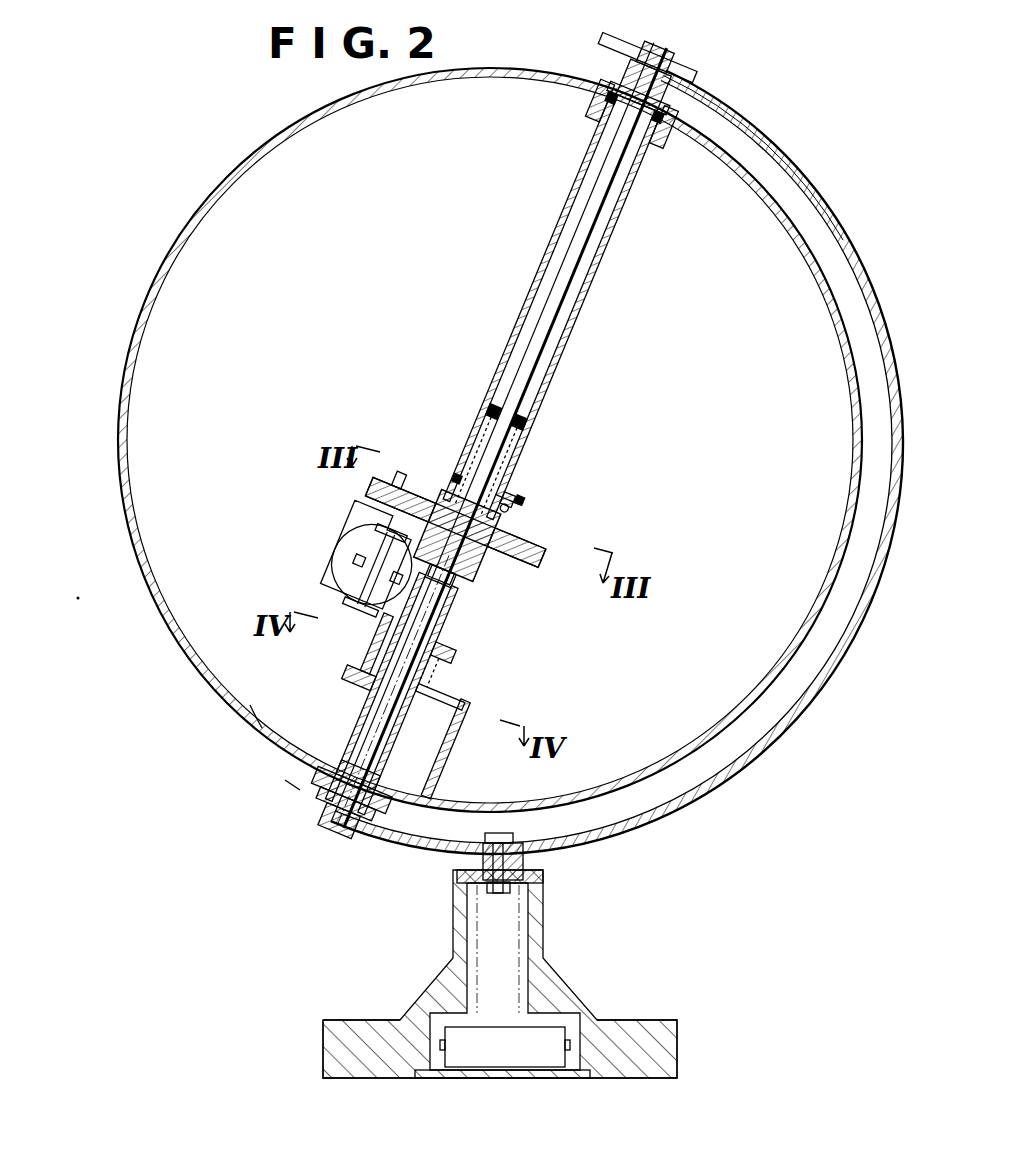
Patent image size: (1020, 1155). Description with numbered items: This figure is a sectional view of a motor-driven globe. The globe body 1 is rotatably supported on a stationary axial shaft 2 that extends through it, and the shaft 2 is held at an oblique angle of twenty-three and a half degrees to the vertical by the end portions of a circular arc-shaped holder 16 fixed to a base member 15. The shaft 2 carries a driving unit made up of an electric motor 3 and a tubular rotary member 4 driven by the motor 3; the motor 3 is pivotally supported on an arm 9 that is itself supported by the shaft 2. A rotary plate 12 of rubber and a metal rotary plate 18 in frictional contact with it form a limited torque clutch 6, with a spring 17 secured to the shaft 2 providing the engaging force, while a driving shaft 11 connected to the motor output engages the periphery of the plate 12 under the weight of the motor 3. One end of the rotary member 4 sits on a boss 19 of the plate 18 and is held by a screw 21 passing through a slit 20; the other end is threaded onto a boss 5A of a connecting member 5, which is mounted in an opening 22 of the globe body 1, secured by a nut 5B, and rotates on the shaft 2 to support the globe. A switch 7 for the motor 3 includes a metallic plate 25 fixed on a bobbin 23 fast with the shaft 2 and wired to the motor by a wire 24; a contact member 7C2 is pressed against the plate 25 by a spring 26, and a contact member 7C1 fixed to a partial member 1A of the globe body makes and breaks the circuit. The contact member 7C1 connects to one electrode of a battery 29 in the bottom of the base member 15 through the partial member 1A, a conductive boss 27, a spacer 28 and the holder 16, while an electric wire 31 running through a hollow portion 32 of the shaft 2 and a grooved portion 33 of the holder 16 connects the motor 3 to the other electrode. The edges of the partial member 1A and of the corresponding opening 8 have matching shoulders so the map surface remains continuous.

The globe body 1 is at (205, 212).
The partial member 1A is at (296, 788).
The stationary axial shaft 2 is at (533, 342).
The electric motor 3 is at (342, 556).
The rotary member 4 is at (566, 345).
The connecting member 5 is at (676, 128).
The boss 5A is at (664, 134).
The nut 5B is at (690, 84).
The limited torque clutch 6 is at (547, 532).
The switch 7 is at (442, 686).
The contact member 7C1 is at (462, 742).
The contact member 7C2 is at (466, 702).
The opening 8 is at (262, 722).
The arm 9 is at (446, 582).
The driving shaft 11 is at (388, 466).
The rotary plate 12 is at (537, 554).
The base member 15 is at (346, 1030).
The circular arc-shaped holder 16 is at (826, 216).
The spring 17 is at (484, 411).
The rotary plate 18 is at (530, 522).
The boss 19 is at (453, 478).
The slit 20 is at (508, 496).
The screw 21 is at (502, 504).
The opening 22 is at (602, 108).
The bobbin 23 is at (432, 650).
The wire 24 is at (336, 642).
The metallic plate 25 is at (352, 676).
The spring 26 is at (442, 664).
The boss 27 is at (346, 772).
The spacer 28 is at (356, 826).
The battery 29 is at (502, 1048).
The electric wire 31 is at (476, 930).
The hollow portion 32 is at (330, 840).
The grooved portion 33 is at (432, 850).